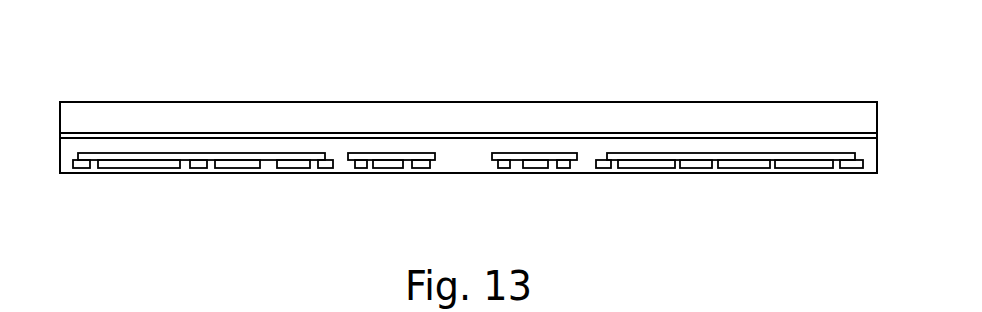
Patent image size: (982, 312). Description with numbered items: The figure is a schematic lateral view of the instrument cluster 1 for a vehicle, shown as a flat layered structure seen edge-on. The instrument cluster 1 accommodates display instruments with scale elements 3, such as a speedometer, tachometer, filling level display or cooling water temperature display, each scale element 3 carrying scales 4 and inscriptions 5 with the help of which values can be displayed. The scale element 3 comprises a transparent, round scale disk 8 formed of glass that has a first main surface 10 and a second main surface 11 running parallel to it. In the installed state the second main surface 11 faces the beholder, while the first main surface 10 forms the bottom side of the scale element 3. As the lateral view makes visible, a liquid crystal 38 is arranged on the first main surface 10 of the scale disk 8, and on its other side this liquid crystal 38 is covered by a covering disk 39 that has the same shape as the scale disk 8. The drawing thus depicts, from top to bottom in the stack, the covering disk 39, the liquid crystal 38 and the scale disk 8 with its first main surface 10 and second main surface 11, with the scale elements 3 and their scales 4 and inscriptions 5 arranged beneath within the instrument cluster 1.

The instrument cluster 1 is at (810, 81).
The scale element 3 is at (208, 170).
The scales 4 is at (627, 153).
The inscriptions 5 is at (573, 168).
The scale disk 8 is at (490, 145).
The first main surface 10 is at (230, 134).
The second main surface 11 is at (348, 173).
The liquid crystal 38 is at (440, 134).
The covering disk 39 is at (358, 113).